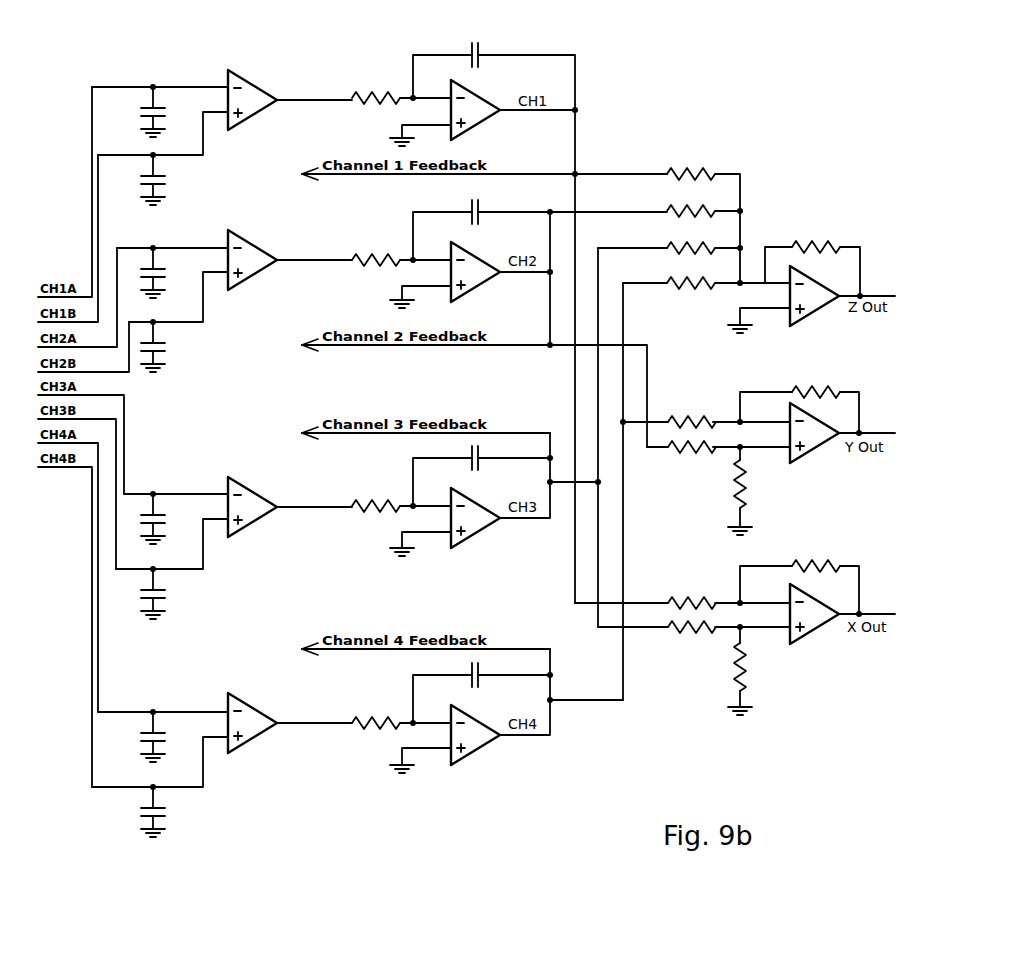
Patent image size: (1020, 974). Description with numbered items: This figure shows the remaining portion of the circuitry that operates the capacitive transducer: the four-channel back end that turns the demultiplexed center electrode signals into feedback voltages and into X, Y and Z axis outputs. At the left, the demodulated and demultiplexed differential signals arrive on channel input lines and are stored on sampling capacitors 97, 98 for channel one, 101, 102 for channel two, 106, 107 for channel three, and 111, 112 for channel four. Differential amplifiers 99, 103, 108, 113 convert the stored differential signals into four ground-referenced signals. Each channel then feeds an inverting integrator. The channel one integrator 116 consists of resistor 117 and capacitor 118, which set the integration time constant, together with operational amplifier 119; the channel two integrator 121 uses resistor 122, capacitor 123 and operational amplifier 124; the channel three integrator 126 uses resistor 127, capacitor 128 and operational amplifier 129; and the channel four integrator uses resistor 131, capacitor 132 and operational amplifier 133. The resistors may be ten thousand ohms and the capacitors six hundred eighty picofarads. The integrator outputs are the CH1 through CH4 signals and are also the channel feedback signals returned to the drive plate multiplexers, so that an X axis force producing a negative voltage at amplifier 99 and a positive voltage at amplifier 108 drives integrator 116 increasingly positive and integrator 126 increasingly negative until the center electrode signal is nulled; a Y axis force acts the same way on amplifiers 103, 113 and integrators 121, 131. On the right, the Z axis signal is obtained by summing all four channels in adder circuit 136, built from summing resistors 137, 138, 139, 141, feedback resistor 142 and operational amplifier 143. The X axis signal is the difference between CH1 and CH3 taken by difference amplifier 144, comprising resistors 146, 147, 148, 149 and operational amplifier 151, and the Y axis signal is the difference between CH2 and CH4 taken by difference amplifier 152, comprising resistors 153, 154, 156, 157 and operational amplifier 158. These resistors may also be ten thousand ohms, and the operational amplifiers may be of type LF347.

The sampling capacitor 97 is at (150, 106).
The sampling capacitor 98 is at (165, 186).
The differential amplifier 99 is at (262, 88).
The sampling capacitor 101 is at (150, 268).
The sampling capacitor 102 is at (165, 352).
The differential amplifier 103 is at (262, 248).
The sampling capacitor 106 is at (160, 514).
The sampling capacitor 107 is at (165, 598).
The differential amplifier 108 is at (262, 494).
The sampling capacitor 111 is at (148, 732).
The sampling capacitor 112 is at (165, 818).
The differential amplifier 113 is at (262, 712).
The inverting integrator 116 is at (490, 122).
The resistor 117 is at (378, 104).
The capacitor 118 is at (478, 48).
The operational amplifier 119 is at (478, 84).
The integrator 121 is at (484, 289).
The resistor 122 is at (378, 267).
The capacitor 123 is at (478, 206).
The operational amplifier 124 is at (472, 250).
The inverting integrator 126 is at (486, 536).
The resistor 127 is at (378, 512).
The capacitor 128 is at (480, 451).
The operational amplifier 129 is at (472, 540).
The resistor 131 is at (378, 732).
The capacitor 132 is at (480, 668).
The operational amplifier 133 is at (468, 760).
The adder circuit 136 is at (829, 312).
The summing resistor 137 is at (670, 176).
The summing resistor 138 is at (670, 214).
The summing resistor 139 is at (690, 250).
The summing resistor 141 is at (703, 287).
The feedback resistor 142 is at (815, 245).
The operational amplifier 143 is at (790, 320).
The difference amplifier 144 is at (820, 462).
The resistor 146 is at (695, 416).
The resistor 147 is at (708, 451).
The resistor 148 is at (815, 388).
The resistor 149 is at (738, 502).
The operational amplifier 151 is at (790, 460).
The difference amplifier 152 is at (822, 642).
The resistor 153 is at (676, 598).
The resistor 154 is at (708, 633).
The resistor 156 is at (815, 564).
The resistor 157 is at (738, 681).
The operational amplifier 158 is at (790, 638).